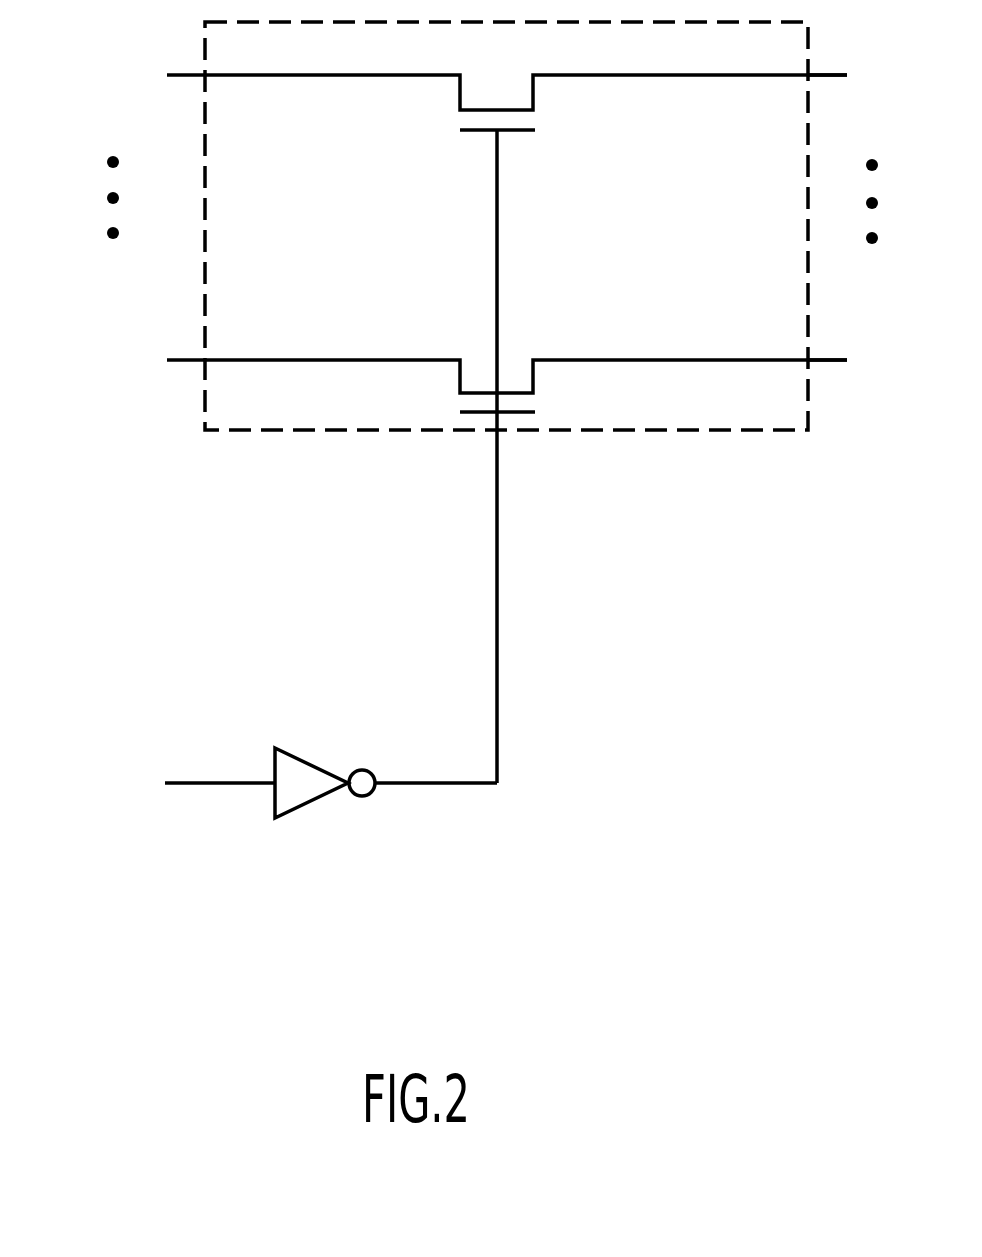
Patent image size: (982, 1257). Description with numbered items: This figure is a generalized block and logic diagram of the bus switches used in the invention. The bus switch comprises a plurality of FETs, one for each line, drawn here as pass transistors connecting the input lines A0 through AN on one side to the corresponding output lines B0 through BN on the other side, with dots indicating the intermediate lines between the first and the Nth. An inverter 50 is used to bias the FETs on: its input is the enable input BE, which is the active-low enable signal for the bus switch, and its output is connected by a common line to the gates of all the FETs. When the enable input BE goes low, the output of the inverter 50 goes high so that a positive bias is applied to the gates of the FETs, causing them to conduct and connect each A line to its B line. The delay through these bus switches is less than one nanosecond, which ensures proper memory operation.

The inverter 50 is at (320, 798).
The input signal line A0 is at (470, 93).
The input signal line AN is at (470, 373).
The output signal line B0 is at (851, 79).
The output signal line BN is at (852, 363).
The enable input BE is at (150, 756).